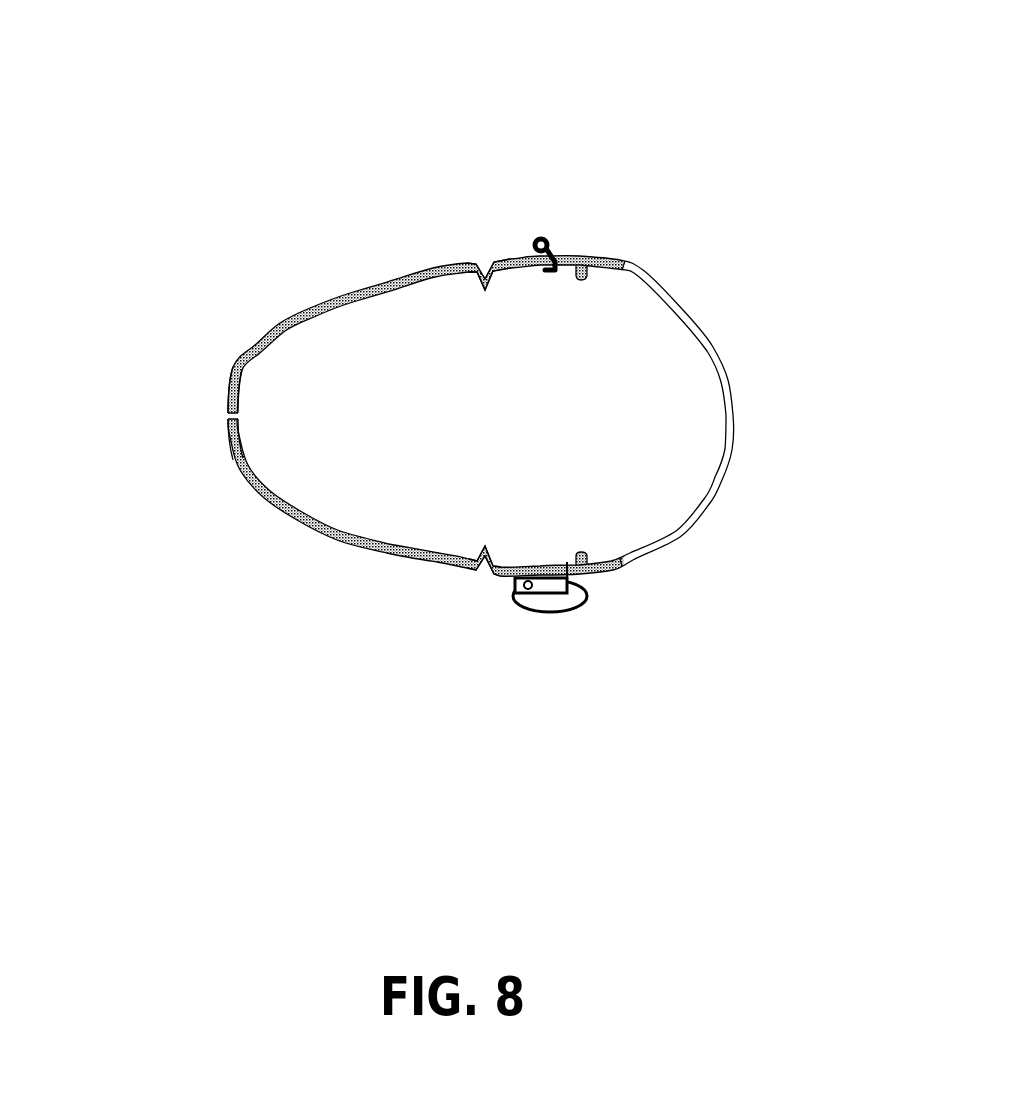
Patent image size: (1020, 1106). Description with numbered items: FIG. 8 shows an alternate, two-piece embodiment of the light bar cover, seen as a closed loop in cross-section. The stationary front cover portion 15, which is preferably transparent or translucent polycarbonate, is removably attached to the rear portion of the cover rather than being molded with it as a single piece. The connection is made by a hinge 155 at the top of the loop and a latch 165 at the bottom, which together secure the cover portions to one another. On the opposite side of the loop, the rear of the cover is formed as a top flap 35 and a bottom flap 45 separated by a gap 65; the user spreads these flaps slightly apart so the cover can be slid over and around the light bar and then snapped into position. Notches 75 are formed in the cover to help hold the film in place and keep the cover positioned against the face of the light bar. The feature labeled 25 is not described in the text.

The stationary front cover portion 15 is at (713, 358).
The notch 25 is at (480, 263).
The top flap 35 is at (223, 408).
The bottom flap 45 is at (230, 438).
The gap 65 is at (210, 424).
The notches 75 is at (594, 276).
The hinge 155 is at (548, 235).
The latch 165 is at (547, 600).